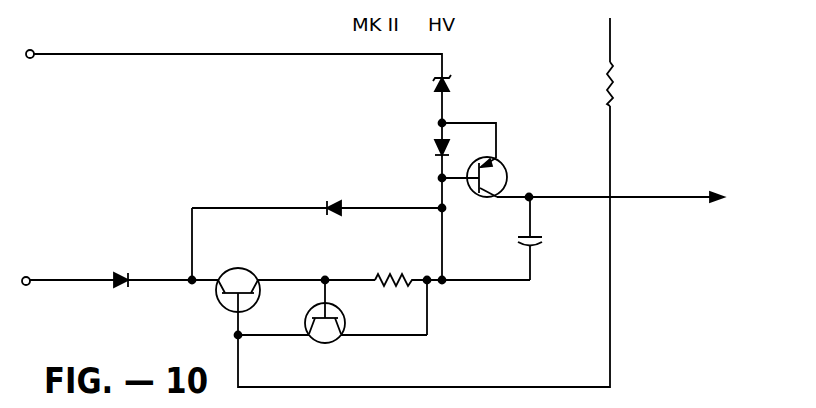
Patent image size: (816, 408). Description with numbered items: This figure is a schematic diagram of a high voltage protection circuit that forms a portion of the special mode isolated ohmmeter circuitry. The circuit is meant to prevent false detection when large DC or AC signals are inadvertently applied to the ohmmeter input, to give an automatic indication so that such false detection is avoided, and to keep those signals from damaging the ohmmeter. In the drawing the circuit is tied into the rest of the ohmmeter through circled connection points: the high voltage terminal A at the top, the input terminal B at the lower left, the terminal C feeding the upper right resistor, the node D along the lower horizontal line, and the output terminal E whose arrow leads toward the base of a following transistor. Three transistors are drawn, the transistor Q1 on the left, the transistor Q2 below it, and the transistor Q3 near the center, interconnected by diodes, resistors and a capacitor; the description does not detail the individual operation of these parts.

The terminal A (MK II HV input) A is at (121, 64).
The terminal B (input) B is at (59, 272).
The terminal C is at (597, 53).
The node D is at (497, 266).
The terminal E (to base Q14) E is at (649, 210).
The transistor Q3 is at (474, 191).
The transistor Q1 is at (226, 301).
The transistor Q2 is at (332, 319).